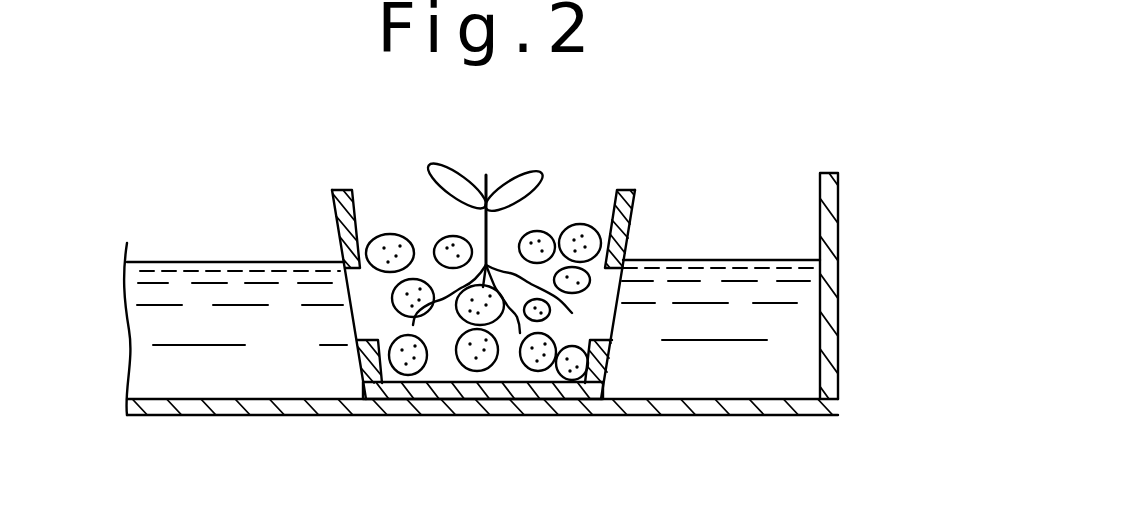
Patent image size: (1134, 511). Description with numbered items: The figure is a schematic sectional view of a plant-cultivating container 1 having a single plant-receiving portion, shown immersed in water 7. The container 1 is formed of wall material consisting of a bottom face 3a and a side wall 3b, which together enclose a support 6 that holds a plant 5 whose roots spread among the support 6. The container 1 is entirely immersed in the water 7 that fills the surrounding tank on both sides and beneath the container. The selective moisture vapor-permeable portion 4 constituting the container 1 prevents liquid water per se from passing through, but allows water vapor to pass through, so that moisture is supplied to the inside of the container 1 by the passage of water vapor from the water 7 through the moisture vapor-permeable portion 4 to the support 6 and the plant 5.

The plant-cultivating container 1 is at (692, 183).
The bottom face 3a is at (542, 392).
The side wall 3b is at (627, 248).
The selective moisture vapor-permeable portion 4 is at (347, 308).
The plant 5 is at (530, 178).
The support 6 is at (478, 371).
The water 7 is at (807, 337).